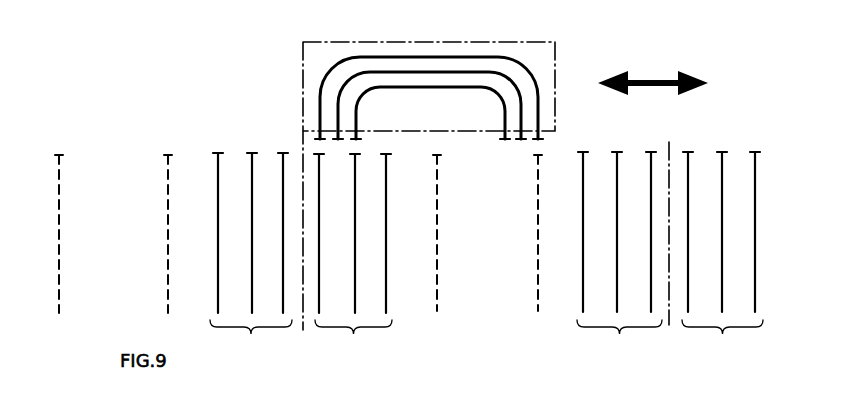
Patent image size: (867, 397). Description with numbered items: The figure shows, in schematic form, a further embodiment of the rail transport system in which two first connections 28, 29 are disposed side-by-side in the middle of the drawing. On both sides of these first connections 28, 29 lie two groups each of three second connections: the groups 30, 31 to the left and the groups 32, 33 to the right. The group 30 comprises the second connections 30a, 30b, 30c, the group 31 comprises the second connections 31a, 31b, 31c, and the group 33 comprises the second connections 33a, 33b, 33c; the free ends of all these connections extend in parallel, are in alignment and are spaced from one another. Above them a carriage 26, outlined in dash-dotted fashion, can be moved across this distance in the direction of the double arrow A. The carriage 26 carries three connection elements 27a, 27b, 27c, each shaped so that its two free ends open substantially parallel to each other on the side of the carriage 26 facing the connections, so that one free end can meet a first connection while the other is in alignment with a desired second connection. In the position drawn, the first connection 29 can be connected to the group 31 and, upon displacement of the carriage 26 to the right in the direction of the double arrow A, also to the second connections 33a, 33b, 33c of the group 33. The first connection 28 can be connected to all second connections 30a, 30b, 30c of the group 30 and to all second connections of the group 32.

The carriage 26 is at (534, 54).
The connection element 27a is at (343, 63).
The connection element 27b is at (365, 76).
The connection element 27c is at (358, 103).
The first connection 28 is at (62, 155).
The first connection 29 is at (164, 157).
The group of second connections 30 is at (230, 235).
The second connection 30a is at (215, 170).
The second connection 30b is at (250, 170).
The second connection 30c is at (281, 170).
The group of second connections 31 is at (371, 257).
The second connection 31a is at (319, 205).
The second connection 31b is at (355, 218).
The second connection 31c is at (386, 216).
The group of second connections 32 is at (619, 259).
The group of second connections 33 is at (689, 236).
The second connection 33a is at (688, 167).
The second connection 33b is at (722, 163).
The second connection 33c is at (755, 160).
The double arrow A is at (653, 75).